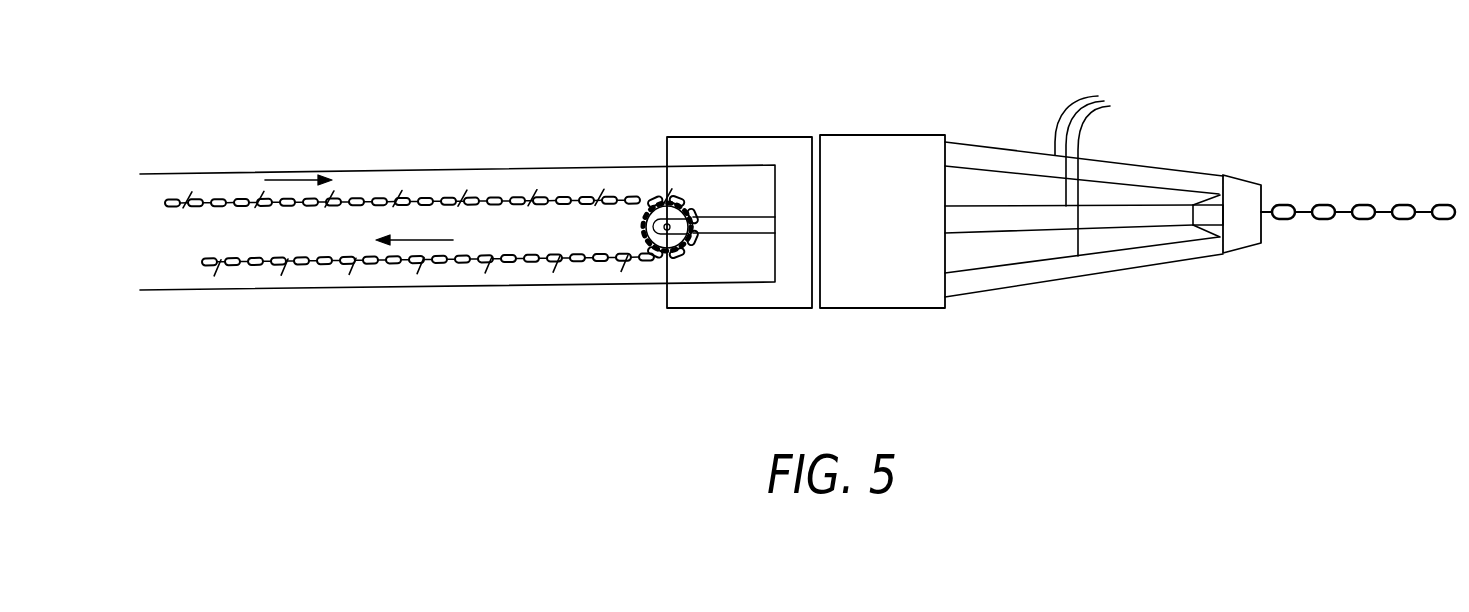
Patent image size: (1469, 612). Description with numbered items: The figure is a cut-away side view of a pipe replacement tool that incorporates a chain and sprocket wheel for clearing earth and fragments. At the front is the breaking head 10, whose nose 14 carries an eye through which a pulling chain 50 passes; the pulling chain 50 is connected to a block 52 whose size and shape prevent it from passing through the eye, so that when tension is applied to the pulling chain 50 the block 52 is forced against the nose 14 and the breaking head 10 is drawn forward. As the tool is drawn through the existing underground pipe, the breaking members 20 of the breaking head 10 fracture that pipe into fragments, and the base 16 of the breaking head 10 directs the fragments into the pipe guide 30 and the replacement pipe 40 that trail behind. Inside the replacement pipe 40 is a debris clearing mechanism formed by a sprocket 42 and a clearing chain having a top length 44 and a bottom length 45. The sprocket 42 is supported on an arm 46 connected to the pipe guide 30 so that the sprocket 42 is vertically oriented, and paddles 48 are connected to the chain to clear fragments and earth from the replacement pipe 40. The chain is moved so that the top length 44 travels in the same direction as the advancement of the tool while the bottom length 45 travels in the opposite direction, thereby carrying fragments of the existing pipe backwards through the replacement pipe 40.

The breaking head 10 is at (946, 140).
The nose 14 is at (1249, 254).
The base 16 is at (890, 309).
The breaking members 20 is at (1096, 171).
The pipe guide 30 is at (735, 137).
The replacement pipe 40 is at (508, 166).
The sprocket 42 is at (660, 243).
The top length of clearing chain 44 is at (352, 200).
The bottom length of clearing chain 45 is at (528, 265).
The arm 46 is at (747, 235).
The paddles 48 is at (282, 270).
The pulling chain 50 is at (1322, 205).
The block 52 is at (1203, 204).